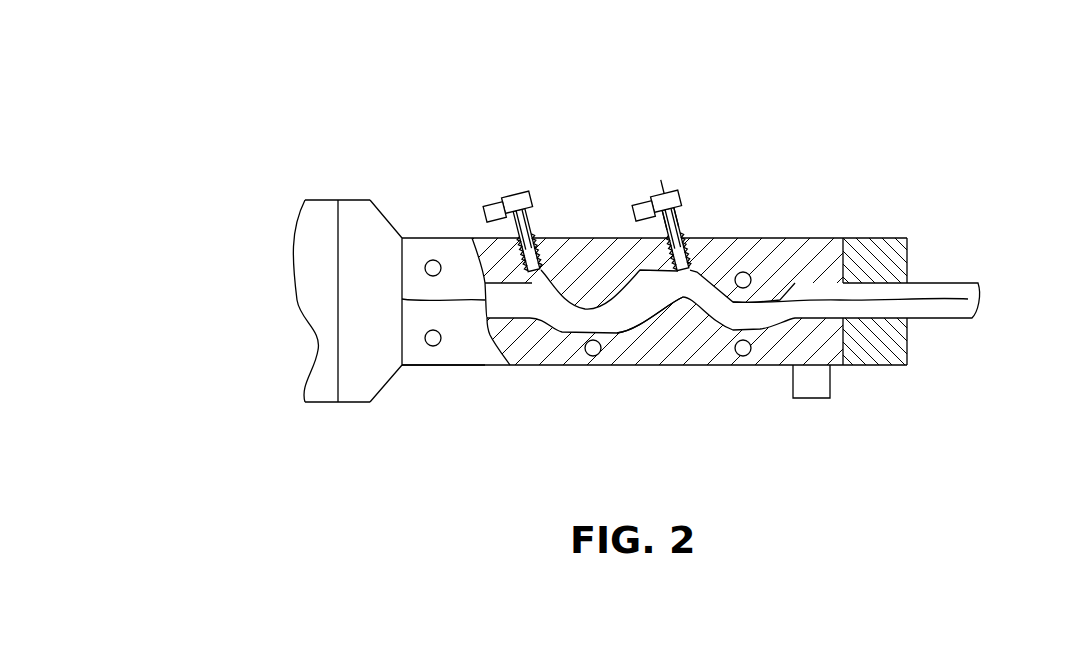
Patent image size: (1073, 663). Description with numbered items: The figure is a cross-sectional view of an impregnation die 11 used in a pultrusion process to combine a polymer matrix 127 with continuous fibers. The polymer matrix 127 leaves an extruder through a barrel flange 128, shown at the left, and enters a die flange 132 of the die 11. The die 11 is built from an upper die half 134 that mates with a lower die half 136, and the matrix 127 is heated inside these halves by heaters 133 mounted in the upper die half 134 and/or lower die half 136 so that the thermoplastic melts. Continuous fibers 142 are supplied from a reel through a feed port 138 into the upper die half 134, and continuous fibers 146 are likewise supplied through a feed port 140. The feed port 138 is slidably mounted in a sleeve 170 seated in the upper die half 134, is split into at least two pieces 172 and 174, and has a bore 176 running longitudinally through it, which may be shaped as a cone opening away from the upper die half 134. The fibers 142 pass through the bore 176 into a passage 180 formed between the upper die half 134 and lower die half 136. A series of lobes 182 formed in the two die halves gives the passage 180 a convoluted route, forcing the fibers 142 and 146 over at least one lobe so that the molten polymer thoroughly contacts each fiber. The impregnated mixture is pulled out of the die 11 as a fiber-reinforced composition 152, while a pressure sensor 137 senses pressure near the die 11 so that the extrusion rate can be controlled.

The impregnation die 11 is at (900, 127).
The polymer matrix 127 is at (547, 305).
The barrel flange 128 is at (308, 250).
The die flange 132 is at (388, 217).
The heaters 133 is at (433, 268).
The upper die half 134 is at (436, 236).
The lower die half 136 is at (427, 365).
The pressure sensor 137 is at (818, 383).
The feed port 138 is at (658, 198).
The feed port 140 is at (527, 190).
The continuous fibers 142 is at (665, 175).
The continuous fibers 146 is at (503, 196).
The fiber-reinforced composition 152 is at (952, 283).
The sleeve 170 is at (700, 228).
The piece 172 is at (700, 202).
The piece 174 is at (653, 226).
The bore 176 is at (692, 196).
The passage 180 is at (608, 318).
The lobes 182 is at (680, 300).